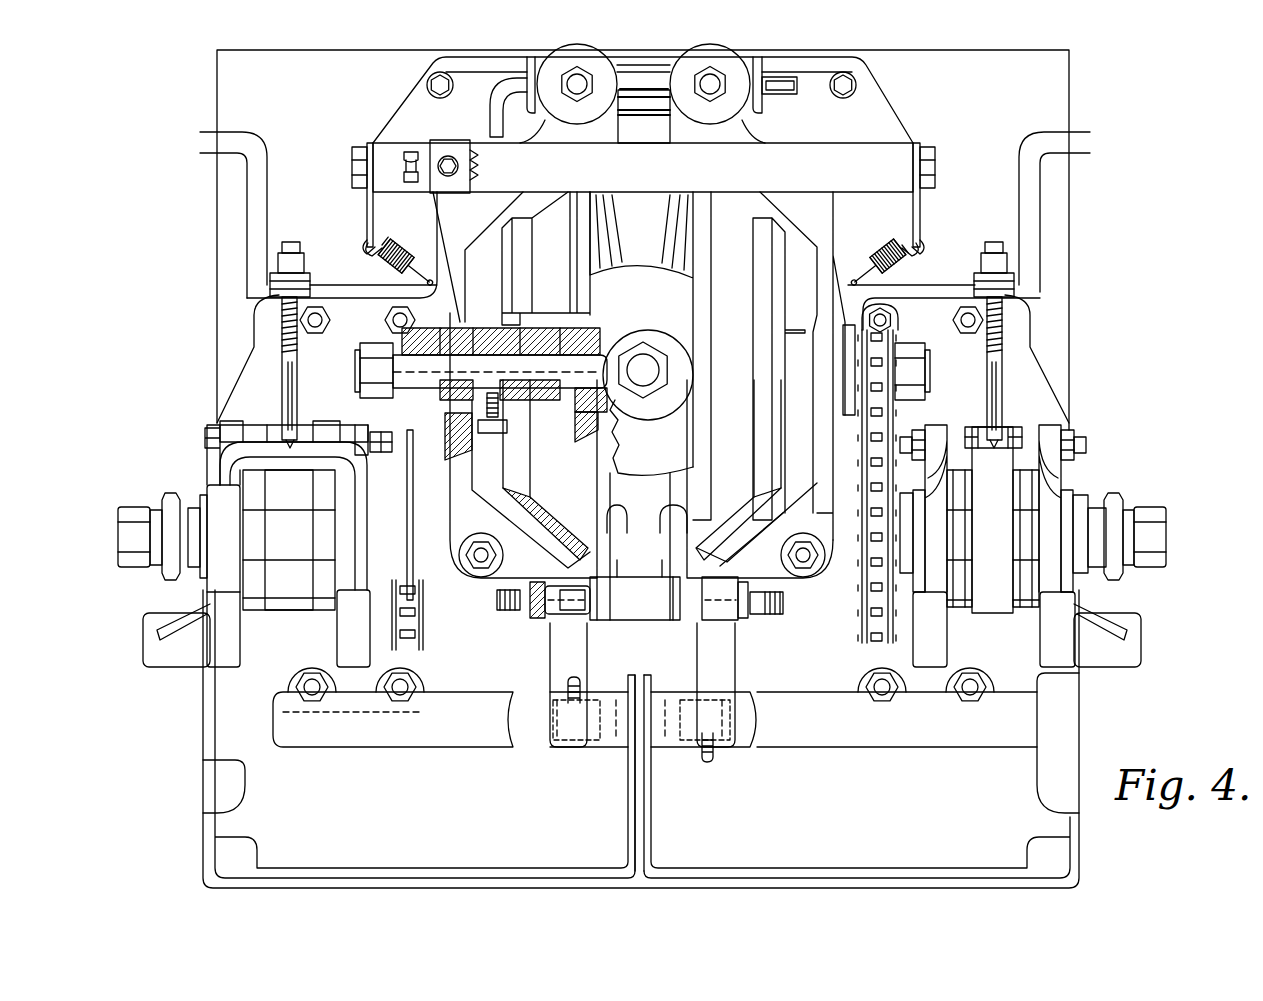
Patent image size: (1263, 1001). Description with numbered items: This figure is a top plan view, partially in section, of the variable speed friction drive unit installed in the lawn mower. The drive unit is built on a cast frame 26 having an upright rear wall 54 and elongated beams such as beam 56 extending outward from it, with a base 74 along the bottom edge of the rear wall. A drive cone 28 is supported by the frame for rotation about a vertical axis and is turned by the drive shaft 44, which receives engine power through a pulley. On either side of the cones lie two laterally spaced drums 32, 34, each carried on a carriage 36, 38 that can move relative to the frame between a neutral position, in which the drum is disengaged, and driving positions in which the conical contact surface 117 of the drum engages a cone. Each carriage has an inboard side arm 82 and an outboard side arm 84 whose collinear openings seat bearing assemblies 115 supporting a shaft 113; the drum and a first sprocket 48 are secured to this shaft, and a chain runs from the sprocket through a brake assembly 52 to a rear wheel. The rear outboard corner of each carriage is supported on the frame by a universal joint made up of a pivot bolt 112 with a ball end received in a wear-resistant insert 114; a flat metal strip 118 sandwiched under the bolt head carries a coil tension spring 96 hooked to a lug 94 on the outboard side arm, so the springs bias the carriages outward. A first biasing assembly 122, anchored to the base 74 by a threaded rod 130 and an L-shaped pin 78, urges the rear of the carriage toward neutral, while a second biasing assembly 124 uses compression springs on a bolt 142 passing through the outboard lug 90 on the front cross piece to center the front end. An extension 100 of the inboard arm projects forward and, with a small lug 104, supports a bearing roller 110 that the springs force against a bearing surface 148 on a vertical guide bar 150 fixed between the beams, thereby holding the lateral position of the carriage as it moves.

The frame 26 is at (930, 130).
The drive cone 28 is at (650, 278).
The drum 32 is at (728, 218).
The drum 34 is at (556, 218).
The carriage 36 is at (872, 290).
The carriage 38 is at (415, 290).
The drive shaft 44 is at (643, 380).
The first sprocket 48 is at (402, 396).
The brake assembly 52 is at (310, 632).
The rear wall 54 is at (663, 165).
The beam 56 is at (648, 622).
The base 74 is at (873, 113).
The L-shaped pin 78 is at (488, 117).
The inboard side arm 82 is at (666, 519).
The outboard side arm 84 is at (477, 510).
The outboard lug 90 is at (462, 548).
The lug 94 is at (434, 268).
The coil tension spring 96 is at (386, 243).
The extension 100 is at (595, 660).
The lug 104 is at (558, 628).
The bearing roller 110 is at (641, 608).
The pivot bolt 112 is at (352, 162).
The shaft 113 is at (358, 372).
The insert 114 is at (407, 160).
The bearing assembly 115 is at (460, 326).
The contact surface 117 is at (553, 405).
The metal strip 118 is at (368, 200).
The first biasing assembly 122 is at (688, 40).
The second biasing assembly 124 is at (413, 610).
The threaded rod 130 is at (577, 95).
The bolt 142 is at (500, 555).
The bearing surface 148 is at (558, 622).
The guide bar 150 is at (532, 602).